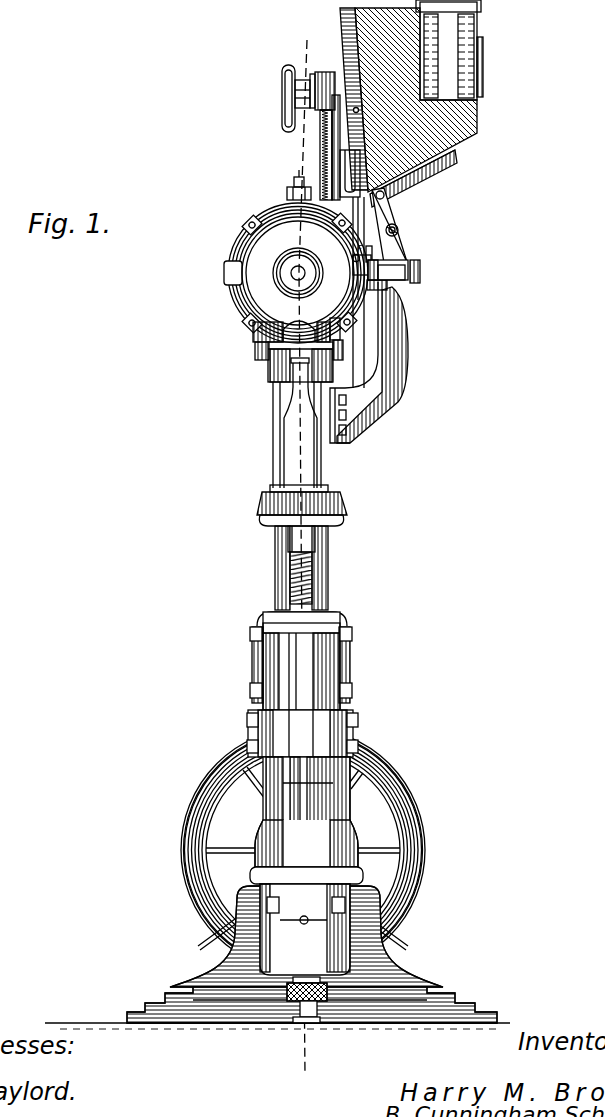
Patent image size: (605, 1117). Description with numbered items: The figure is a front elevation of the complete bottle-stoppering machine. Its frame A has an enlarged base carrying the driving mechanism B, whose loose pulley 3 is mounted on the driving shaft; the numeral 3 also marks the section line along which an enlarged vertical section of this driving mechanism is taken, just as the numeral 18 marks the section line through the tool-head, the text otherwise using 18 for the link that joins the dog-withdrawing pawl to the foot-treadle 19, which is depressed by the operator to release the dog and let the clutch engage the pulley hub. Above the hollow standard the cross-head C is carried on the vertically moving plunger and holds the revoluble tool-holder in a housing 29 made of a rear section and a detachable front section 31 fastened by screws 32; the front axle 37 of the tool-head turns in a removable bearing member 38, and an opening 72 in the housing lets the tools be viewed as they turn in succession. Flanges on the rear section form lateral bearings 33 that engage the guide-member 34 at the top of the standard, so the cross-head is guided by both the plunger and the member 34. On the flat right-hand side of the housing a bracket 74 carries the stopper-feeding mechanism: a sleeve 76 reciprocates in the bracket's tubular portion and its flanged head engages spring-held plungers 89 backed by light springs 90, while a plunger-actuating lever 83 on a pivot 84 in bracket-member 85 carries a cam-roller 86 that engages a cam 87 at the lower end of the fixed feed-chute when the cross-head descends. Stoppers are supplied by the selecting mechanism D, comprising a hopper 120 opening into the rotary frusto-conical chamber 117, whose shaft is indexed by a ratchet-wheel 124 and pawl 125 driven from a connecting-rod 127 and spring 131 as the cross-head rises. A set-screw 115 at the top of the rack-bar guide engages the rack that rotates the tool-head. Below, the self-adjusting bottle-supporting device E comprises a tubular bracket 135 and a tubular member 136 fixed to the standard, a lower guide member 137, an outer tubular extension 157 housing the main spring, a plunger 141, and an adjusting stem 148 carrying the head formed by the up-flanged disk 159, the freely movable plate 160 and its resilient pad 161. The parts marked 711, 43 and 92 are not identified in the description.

The link 18 is at (263, 33).
The pawl 125 is at (314, 78).
The ratchet-wheel 124 is at (320, 115).
The connecting-rod 127 is at (321, 150).
The spring 131 is at (334, 124).
The set-screw 115 is at (295, 180).
The bracket 711 is at (289, 193).
The rotary chamber 117 is at (408, 100).
The hopper 120 is at (474, 70).
The cam-roller 86 is at (398, 212).
The stopper selecting and delivering mechanism D is at (401, 191).
The front section 31 is at (240, 250).
The screws 32 is at (244, 225).
The removable bearing member 38 is at (268, 268).
The housing 29 is at (277, 278).
The front axle 37 is at (288, 284).
The opening 72 is at (228, 282).
The lateral bearings 33 is at (255, 352).
The guide-member 34 is at (272, 372).
The shaft 43 is at (297, 470).
The resilient pad 161 is at (330, 489).
The down-flanged disk 160 is at (348, 503).
The up-flanged disk 159 is at (342, 522).
The stem 148 is at (298, 562).
The tubular member 136 is at (350, 663).
The plunger 141 is at (256, 629).
The tubular bracket 135 is at (358, 729).
The outer tubular extension 157 is at (308, 849).
The guide member 137 is at (312, 900).
The loose pulley 3 is at (203, 800).
The foot-treadle 19 is at (390, 962).
The bracket body 92 is at (400, 302).
The bracket 74 is at (362, 316).
The pivot 84 is at (402, 232).
The plunger-actuating lever 83 is at (384, 237).
The bracket-member 85 is at (410, 248).
The cam 87 is at (403, 243).
The sleeve 76 is at (410, 270).
The springs 90 is at (402, 279).
The spring-held plungers 89 is at (418, 279).
The frame A is at (273, 430).
The driving mechanism B is at (284, 850).
The cross-head C is at (246, 273).
The bottle-supporting device E is at (312, 568).